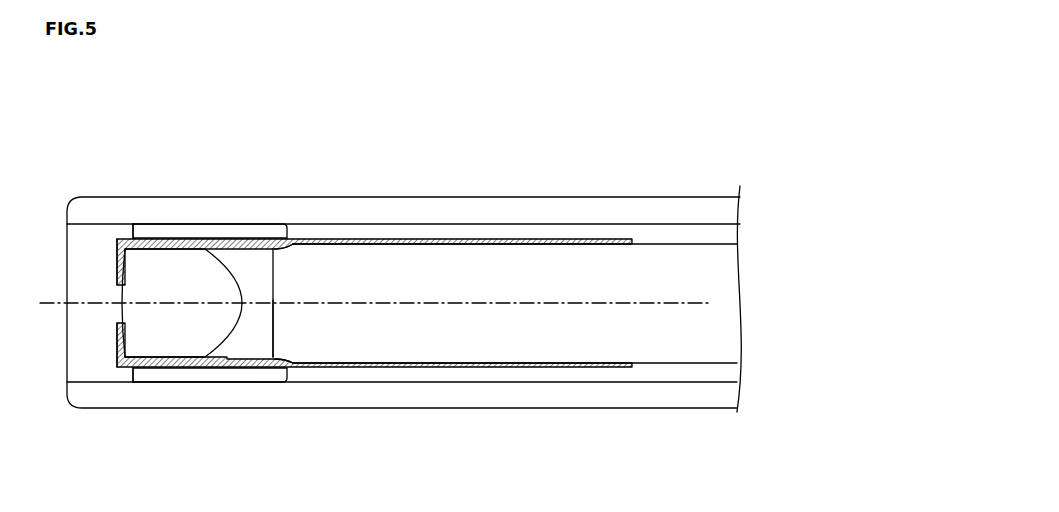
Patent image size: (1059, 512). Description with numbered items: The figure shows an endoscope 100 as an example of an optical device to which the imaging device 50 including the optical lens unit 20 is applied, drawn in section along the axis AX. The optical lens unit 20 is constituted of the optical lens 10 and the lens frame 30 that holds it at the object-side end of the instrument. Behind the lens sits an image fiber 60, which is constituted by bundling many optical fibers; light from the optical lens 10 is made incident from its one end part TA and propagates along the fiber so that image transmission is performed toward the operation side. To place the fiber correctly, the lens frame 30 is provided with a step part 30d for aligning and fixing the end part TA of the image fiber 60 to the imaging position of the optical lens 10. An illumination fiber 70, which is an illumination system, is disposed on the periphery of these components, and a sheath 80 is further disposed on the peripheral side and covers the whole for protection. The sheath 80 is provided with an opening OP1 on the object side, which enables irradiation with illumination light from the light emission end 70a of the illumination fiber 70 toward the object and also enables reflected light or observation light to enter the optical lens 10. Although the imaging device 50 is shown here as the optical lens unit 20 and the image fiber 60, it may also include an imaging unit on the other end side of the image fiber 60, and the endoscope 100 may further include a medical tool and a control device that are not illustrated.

The endoscope 100 is at (711, 72).
The imaging device 50 is at (532, 180).
The sheath 80 is at (499, 213).
The image fiber 60 is at (651, 268).
The illumination fiber 70 is at (378, 224).
The light emission end 70a is at (132, 231).
The opening OP1 is at (80, 273).
The lens frame 30 is at (189, 239).
The step part 30d is at (297, 241).
The optical lens 10 is at (221, 293).
The optical lens unit 20 is at (213, 156).
The end part of the image fiber TA is at (273, 330).
The optical axis AX is at (349, 306).